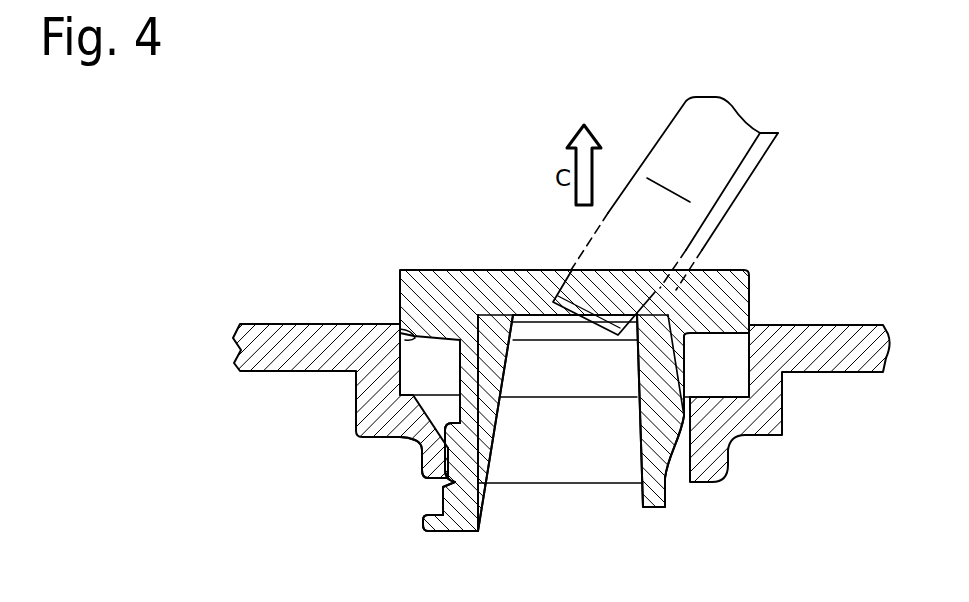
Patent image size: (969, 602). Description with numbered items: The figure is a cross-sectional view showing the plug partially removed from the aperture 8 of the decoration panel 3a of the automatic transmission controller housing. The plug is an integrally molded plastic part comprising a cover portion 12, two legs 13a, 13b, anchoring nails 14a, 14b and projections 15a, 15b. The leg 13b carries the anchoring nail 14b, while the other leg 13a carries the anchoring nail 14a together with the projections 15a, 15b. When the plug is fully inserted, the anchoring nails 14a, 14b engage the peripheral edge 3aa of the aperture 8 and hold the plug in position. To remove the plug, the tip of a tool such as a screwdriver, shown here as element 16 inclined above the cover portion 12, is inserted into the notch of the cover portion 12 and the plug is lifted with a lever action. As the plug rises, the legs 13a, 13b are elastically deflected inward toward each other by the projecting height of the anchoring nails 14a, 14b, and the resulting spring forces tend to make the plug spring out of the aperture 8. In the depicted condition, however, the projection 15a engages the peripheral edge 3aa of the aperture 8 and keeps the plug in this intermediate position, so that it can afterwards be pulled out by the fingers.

The decoration panel 3a is at (278, 323).
The peripheral edge 3aa is at (440, 479).
The aperture 8 is at (400, 330).
The cover portion 12 is at (748, 271).
The leg 13a is at (495, 420).
The leg 13b is at (643, 430).
The anchoring nail 14a is at (448, 424).
The anchoring nail 14b is at (710, 442).
The projection 15a is at (440, 497).
The projection 15b is at (427, 530).
The tool (screwdriver) 16 is at (748, 178).